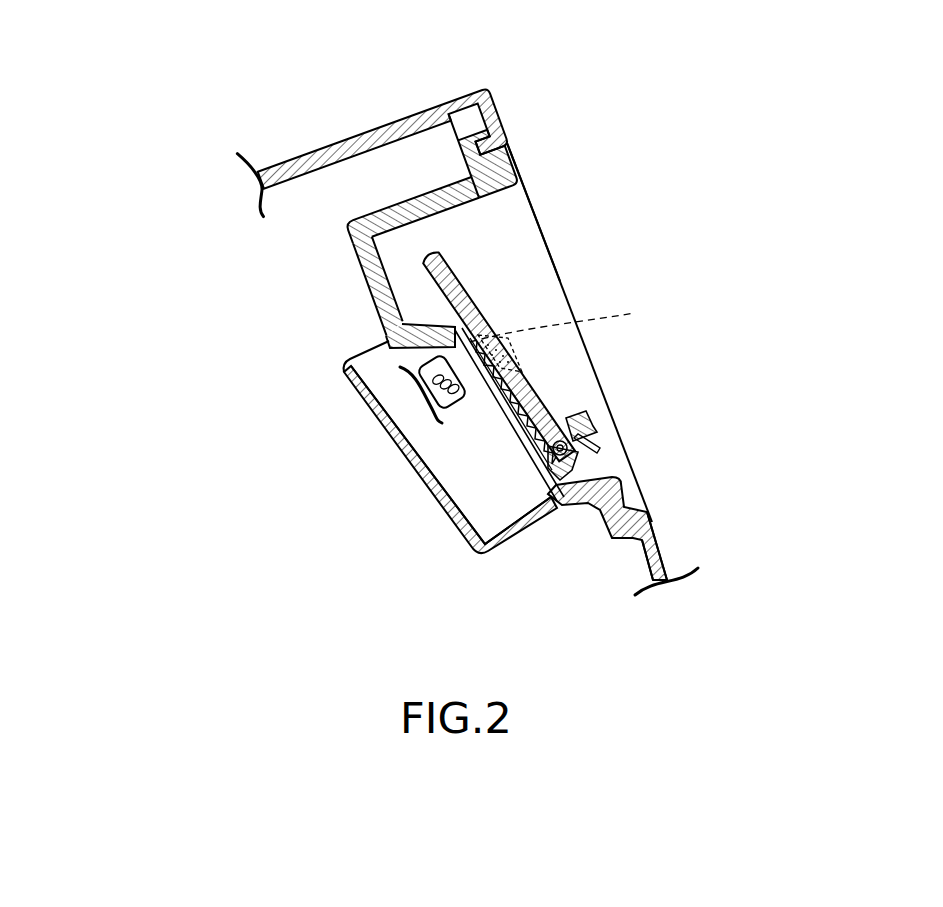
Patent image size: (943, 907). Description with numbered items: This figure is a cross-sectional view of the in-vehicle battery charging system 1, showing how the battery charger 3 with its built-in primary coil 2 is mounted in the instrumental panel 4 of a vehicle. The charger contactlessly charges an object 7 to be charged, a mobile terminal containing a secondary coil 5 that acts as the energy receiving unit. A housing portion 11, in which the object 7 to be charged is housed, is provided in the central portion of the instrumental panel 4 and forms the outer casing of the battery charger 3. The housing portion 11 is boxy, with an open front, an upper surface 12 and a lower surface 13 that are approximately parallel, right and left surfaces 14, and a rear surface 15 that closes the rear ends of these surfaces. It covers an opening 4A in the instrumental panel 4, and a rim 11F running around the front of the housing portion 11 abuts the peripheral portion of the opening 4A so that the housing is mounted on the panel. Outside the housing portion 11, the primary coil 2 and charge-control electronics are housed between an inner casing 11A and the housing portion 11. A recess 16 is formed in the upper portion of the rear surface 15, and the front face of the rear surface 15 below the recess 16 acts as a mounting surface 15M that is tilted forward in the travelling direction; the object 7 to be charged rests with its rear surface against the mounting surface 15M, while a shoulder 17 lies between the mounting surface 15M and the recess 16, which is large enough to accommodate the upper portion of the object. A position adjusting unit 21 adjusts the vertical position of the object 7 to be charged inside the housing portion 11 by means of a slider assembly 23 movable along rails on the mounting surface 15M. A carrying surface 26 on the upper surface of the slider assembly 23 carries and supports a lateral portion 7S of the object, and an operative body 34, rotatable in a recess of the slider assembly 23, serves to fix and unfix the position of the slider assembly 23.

The in-vehicle battery charging system 1 is at (506, 336).
The primary coil 2 is at (425, 388).
The battery charger 3 is at (347, 392).
The instrumental panel 4 is at (668, 565).
The opening 4A is at (473, 190).
The secondary coil 5 is at (560, 319).
The object to be charged 7 is at (463, 282).
The lateral portion 7S is at (560, 403).
The carrying surface 26 is at (500, 353).
The housing portion 11 is at (537, 297).
The inner casing 11A is at (463, 548).
The rim 11F is at (500, 160).
The upper surface 12 is at (417, 203).
The lower surface 13 is at (580, 513).
The right and left surfaces 14 is at (510, 212).
The rear surface 15 is at (358, 254).
The mounting surface 15M is at (500, 400).
The recess 16 is at (397, 277).
The shoulder 17 is at (387, 328).
The position adjusting unit 21 is at (597, 435).
The slider assembly 23 is at (567, 423).
The operative body 34 is at (582, 448).